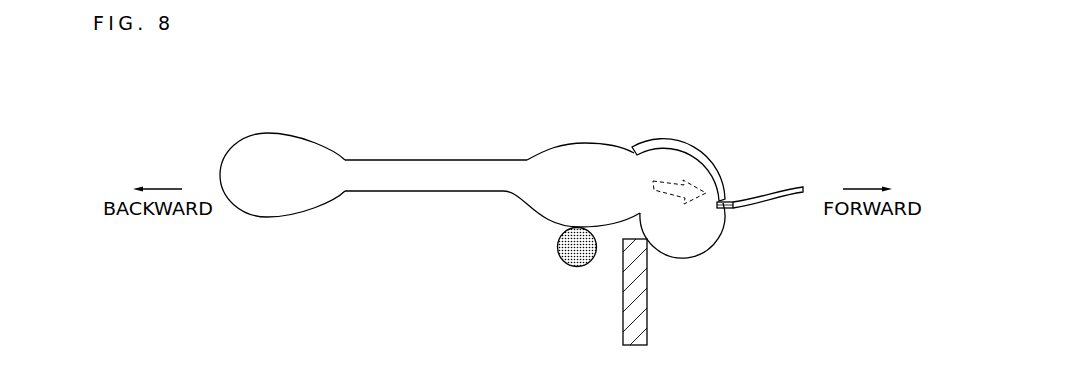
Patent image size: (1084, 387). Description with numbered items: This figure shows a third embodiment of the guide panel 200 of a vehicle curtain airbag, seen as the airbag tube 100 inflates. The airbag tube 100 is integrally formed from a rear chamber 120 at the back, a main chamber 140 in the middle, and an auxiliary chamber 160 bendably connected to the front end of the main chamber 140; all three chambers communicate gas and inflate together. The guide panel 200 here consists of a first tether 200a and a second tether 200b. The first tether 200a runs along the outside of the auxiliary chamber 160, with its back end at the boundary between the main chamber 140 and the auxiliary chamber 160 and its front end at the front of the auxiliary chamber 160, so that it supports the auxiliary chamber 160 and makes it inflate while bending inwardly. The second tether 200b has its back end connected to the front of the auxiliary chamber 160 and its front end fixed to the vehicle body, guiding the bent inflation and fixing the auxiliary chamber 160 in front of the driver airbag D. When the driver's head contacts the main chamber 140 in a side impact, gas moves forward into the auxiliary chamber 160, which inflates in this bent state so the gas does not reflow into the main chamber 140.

The airbag tube 100 is at (437, 150).
The rear chamber 120 is at (272, 208).
The main chamber 140 is at (575, 160).
The auxiliary chamber 160 is at (703, 226).
The guide panel 200 is at (737, 178).
The first tether 200a is at (657, 145).
The second tether 200b is at (790, 187).
The driver airbag D is at (642, 326).